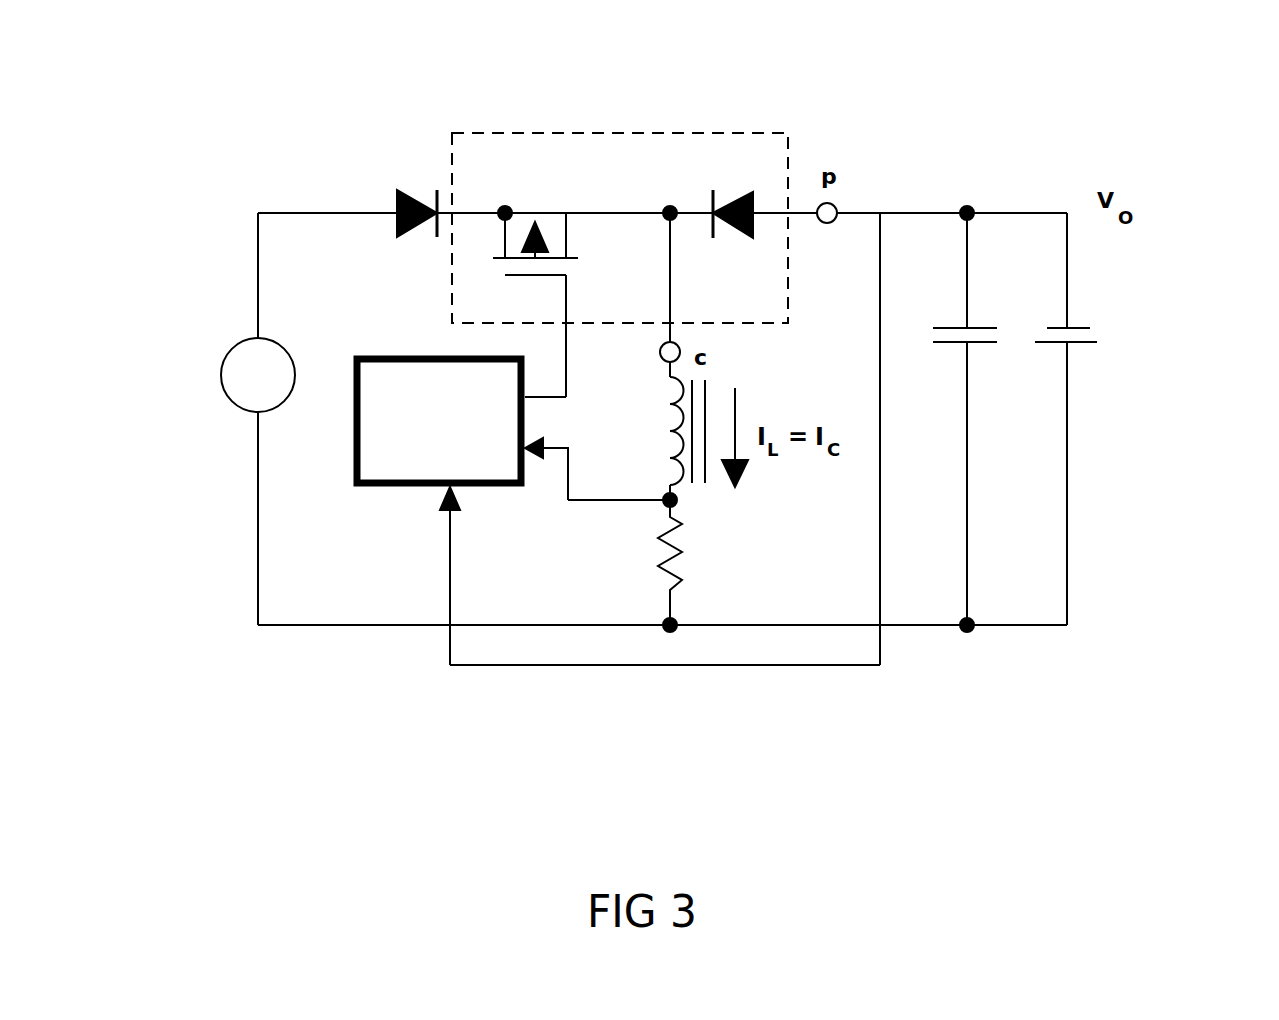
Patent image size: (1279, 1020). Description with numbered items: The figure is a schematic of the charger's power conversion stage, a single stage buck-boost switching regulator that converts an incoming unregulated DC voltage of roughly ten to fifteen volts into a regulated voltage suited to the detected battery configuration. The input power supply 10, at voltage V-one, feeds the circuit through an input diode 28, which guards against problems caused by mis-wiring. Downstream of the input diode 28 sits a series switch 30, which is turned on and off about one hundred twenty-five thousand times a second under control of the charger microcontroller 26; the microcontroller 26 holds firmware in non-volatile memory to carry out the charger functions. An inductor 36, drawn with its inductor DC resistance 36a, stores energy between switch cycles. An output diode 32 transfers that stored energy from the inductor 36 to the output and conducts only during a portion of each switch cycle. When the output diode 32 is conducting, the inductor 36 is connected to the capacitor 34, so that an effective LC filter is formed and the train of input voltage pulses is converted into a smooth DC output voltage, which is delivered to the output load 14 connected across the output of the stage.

The input power supply 10 is at (237, 410).
The output load 14 is at (1100, 335).
The charger microcontroller 26 is at (358, 355).
The input diode 28 is at (378, 153).
The series switch 30 is at (540, 133).
The output diode 32 is at (748, 133).
The capacitor 34 is at (950, 320).
The inductor 36 is at (687, 467).
The inductor DC resistance 36a is at (687, 558).